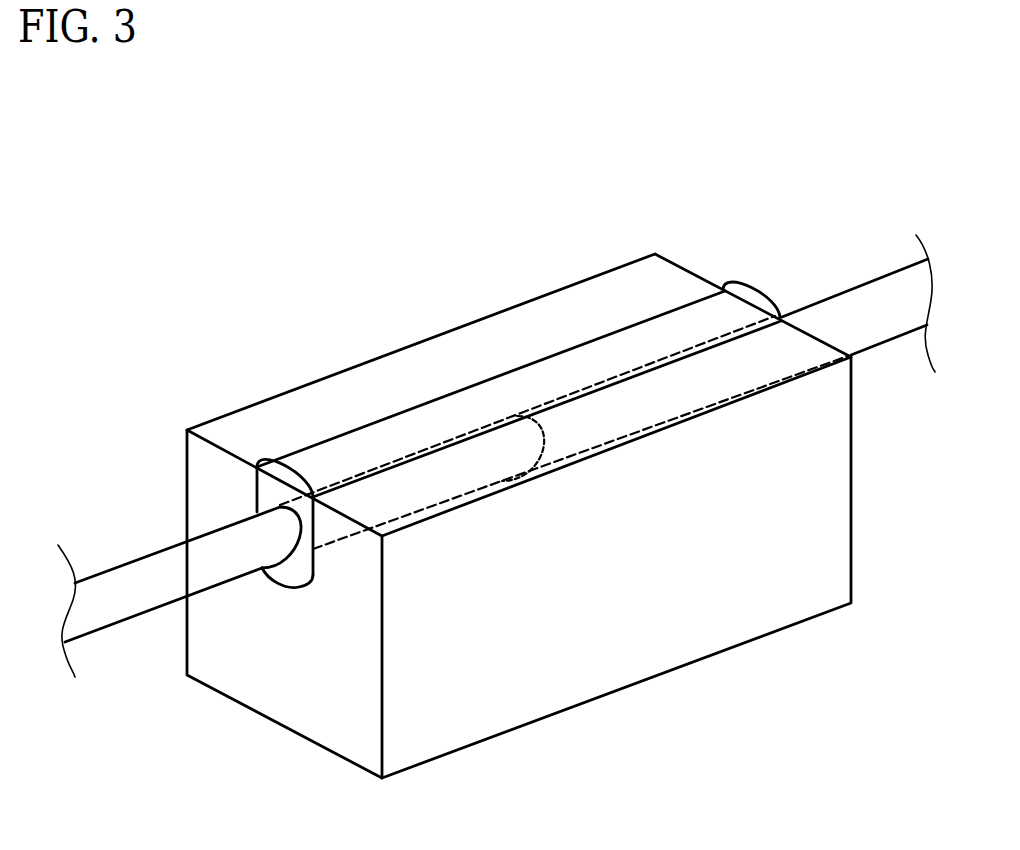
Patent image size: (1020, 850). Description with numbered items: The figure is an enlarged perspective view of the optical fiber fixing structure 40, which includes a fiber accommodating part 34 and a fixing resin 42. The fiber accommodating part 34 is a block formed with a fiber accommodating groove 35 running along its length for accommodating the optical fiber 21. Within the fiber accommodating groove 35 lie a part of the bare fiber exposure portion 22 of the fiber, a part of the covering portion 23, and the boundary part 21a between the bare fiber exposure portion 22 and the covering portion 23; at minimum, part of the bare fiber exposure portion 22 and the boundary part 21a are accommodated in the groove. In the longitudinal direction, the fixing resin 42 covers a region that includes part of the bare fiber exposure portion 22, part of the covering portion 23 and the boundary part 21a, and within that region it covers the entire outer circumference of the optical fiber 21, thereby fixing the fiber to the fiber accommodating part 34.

The optical fiber fixing structure 40 is at (678, 147).
The fiber accommodating part 34 is at (368, 360).
The covering portion 23 is at (600, 378).
The fiber accommodating groove 35 is at (263, 468).
The fixing resin 42 is at (746, 290).
The bare fiber exposure portion 22 is at (117, 565).
The boundary part 21a is at (497, 420).
The optical fiber 21 is at (852, 277).